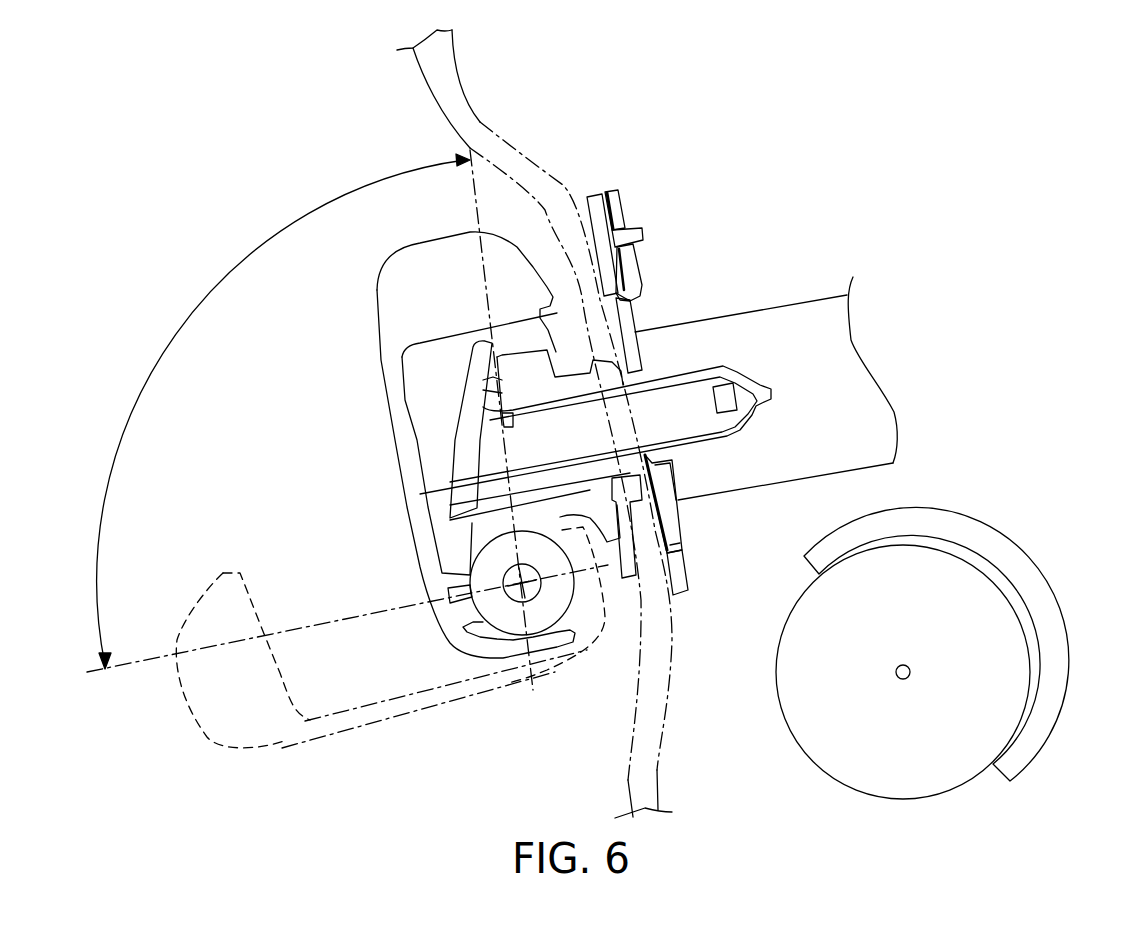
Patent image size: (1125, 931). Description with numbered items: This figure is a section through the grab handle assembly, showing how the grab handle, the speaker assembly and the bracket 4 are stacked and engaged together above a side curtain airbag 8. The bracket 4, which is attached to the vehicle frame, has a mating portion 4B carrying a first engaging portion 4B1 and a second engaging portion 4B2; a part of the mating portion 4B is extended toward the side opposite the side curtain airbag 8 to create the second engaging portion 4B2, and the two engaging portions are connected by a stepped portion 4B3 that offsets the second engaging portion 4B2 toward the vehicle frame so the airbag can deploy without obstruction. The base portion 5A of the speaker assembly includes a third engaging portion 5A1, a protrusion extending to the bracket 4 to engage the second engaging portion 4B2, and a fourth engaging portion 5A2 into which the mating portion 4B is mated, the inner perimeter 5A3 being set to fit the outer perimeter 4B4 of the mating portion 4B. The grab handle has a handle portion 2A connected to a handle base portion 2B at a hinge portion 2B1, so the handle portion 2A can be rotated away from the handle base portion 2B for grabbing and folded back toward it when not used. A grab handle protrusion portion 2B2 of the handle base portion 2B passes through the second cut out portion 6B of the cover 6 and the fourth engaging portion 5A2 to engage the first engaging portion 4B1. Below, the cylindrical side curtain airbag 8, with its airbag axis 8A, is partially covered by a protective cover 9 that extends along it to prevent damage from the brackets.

The handle portion 2A is at (272, 723).
The handle base portion 2B is at (542, 295).
The hinge portion 2B1 is at (498, 614).
The grab handle protrusion portion 2B2 is at (715, 370).
The bracket 4 is at (802, 320).
The mating portion 4B is at (680, 533).
The first engaging portion 4B1 is at (672, 490).
The second engaging portion 4B2 is at (642, 247).
The stepped portion 4B3 is at (645, 292).
The outer perimeter 4B4 is at (685, 560).
The base portion 5A is at (597, 210).
The third engaging portion 5A1 is at (643, 226).
The fourth engaging portion 5A2 is at (440, 496).
The inner perimeter 5A3 is at (628, 300).
The cover 6 is at (662, 775).
The second cut out portion 6B is at (640, 503).
The side curtain airbag 8 is at (867, 770).
The airbag axis 8A is at (915, 688).
The protective cover 9 is at (1047, 643).